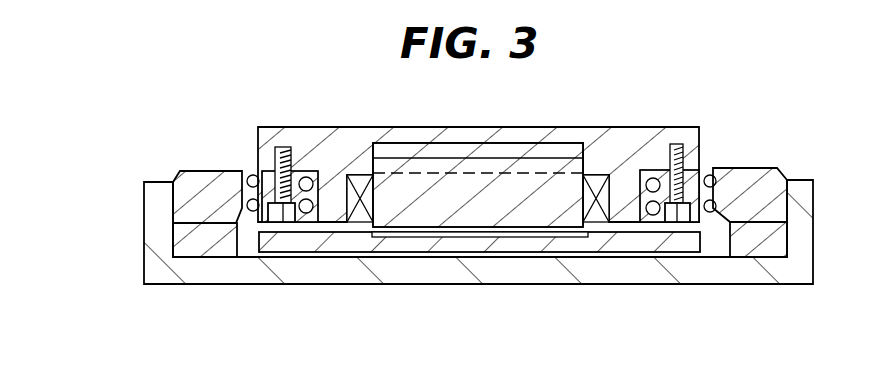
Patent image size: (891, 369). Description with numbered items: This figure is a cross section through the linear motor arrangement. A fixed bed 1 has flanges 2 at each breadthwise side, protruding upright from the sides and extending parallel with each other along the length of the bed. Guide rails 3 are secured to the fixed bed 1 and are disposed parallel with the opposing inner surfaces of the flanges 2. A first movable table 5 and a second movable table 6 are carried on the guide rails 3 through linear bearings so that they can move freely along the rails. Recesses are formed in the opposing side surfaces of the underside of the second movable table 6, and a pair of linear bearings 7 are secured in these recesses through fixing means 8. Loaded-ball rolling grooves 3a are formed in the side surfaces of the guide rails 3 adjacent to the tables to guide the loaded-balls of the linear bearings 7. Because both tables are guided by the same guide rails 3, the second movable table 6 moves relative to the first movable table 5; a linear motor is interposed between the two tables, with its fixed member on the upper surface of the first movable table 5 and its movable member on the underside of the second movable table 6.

The fixed bed 1 is at (445, 267).
The flange 2 is at (144, 210).
The guide rail 3 is at (188, 170).
The loaded-ball rolling groove 3a is at (252, 199).
The first movable table 5 is at (353, 242).
The second movable table 6 is at (623, 126).
The linear bearing 7 is at (298, 172).
The fixing means 8 is at (283, 222).